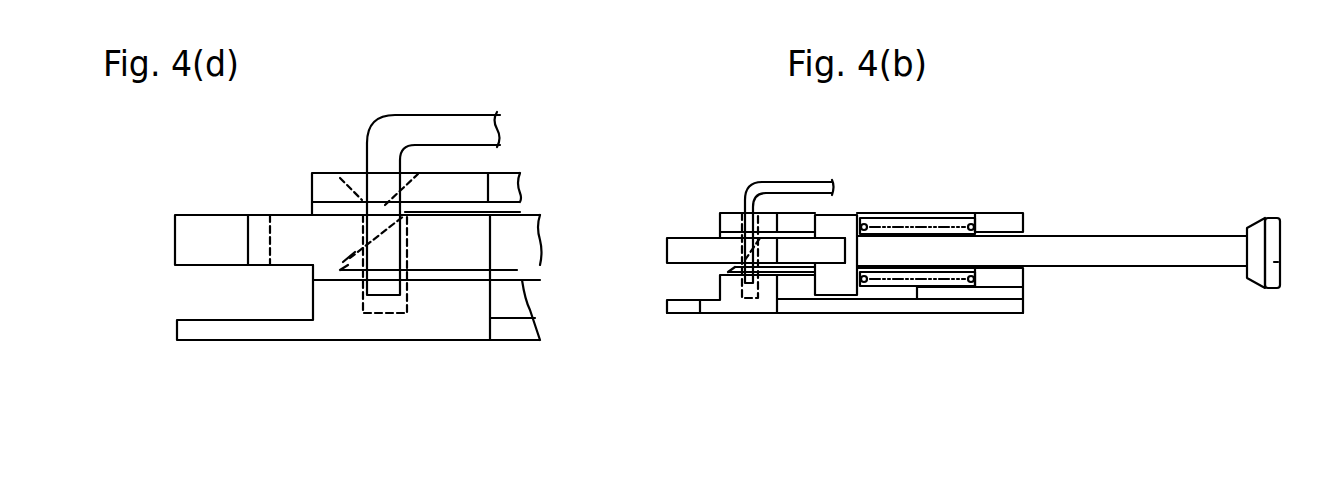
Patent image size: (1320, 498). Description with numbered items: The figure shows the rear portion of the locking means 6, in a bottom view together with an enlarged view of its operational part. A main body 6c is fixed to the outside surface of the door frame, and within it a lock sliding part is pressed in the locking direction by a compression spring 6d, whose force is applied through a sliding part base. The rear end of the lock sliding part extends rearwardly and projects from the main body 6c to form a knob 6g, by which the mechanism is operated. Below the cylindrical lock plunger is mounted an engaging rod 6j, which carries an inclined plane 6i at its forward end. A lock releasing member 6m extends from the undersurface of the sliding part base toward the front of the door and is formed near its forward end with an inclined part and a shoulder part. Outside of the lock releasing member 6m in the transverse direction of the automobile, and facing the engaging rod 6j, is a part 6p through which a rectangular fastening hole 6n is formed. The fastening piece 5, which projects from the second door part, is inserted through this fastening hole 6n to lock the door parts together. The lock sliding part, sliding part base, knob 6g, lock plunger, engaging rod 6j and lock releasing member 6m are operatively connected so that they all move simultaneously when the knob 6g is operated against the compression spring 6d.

In FIG. 4D, the fastening piece 5 is at (395, 116).
In FIG. 4B, the fastening piece 5 is at (820, 176).
In FIG. 4B, the locking means 6 is at (666, 145).
In FIG. 4B, the main body 6c is at (1023, 216).
In FIG. 4B, the compression spring 6d is at (975, 222).
In FIG. 4B, the knob 6g is at (1130, 246).
In FIG. 4D, the inclined plane 6i is at (350, 258).
In FIG. 4B, the inclined plane 6i is at (740, 262).
In FIG. 4B, the engaging rod 6j is at (797, 233).
In FIG. 4D, the lock releasing member 6m is at (198, 240).
In FIG. 4B, the lock releasing member 6m is at (672, 250).
In FIG. 4D, the fastening hole 6n is at (362, 178).
In FIG. 4B, the fastening hole 6n is at (742, 205).
In FIG. 4D, the part 6p is at (330, 182).
In FIG. 4B, the part 6p is at (845, 263).